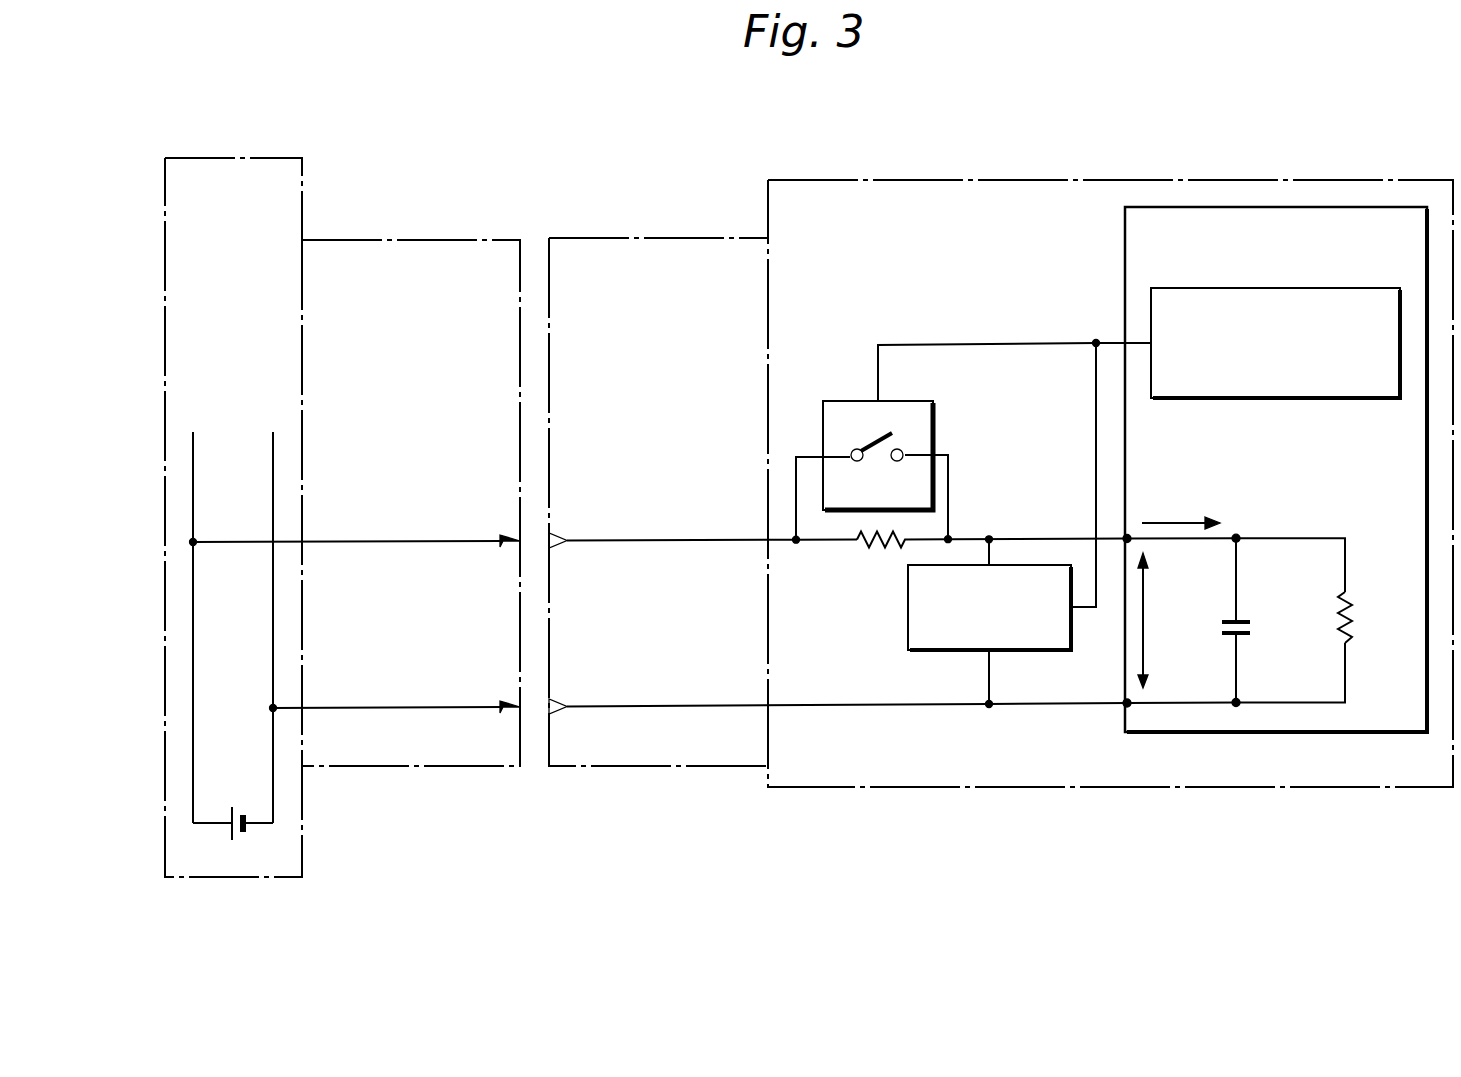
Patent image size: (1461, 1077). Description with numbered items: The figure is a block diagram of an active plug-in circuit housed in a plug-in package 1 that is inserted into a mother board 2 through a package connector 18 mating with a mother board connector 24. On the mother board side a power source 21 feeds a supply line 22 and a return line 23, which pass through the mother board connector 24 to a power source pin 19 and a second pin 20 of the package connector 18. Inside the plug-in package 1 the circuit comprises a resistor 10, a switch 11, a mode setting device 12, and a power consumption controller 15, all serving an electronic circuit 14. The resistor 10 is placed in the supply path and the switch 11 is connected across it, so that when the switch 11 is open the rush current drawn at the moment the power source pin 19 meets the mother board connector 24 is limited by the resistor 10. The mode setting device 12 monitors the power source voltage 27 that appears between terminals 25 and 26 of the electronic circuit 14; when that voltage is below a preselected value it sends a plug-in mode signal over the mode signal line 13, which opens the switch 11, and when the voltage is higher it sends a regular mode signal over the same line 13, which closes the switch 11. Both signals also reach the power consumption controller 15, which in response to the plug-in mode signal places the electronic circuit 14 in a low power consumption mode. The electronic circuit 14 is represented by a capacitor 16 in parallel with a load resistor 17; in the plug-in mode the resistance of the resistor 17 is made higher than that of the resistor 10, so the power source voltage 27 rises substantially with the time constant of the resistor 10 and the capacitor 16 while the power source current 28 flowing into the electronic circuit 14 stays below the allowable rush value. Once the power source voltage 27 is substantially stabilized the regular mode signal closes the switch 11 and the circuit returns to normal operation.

The plug-in package 1 is at (1297, 179).
The mother board 2 is at (303, 183).
The resistor 10 is at (872, 548).
The switch 11 is at (935, 405).
The mode setting device 12 is at (907, 641).
The mode signal line 13 is at (958, 345).
The electronic circuit 14 is at (1125, 248).
The power consumption controller 15 is at (1307, 400).
The capacitor 16 is at (1218, 624).
The resistor 17 is at (1352, 618).
The package connector 18 is at (602, 237).
The power source pin 19 is at (552, 534).
The ground line 20 is at (552, 700).
The power source 21 is at (238, 808).
The power supply line 22 is at (193, 432).
The ground line 23 is at (273, 432).
The mother board connector 24 is at (434, 239).
The terminal 25 is at (1125, 536).
The terminal 26 is at (1125, 702).
The power source voltage E1 27 is at (1146, 660).
The power source current I1 28 is at (1192, 522).